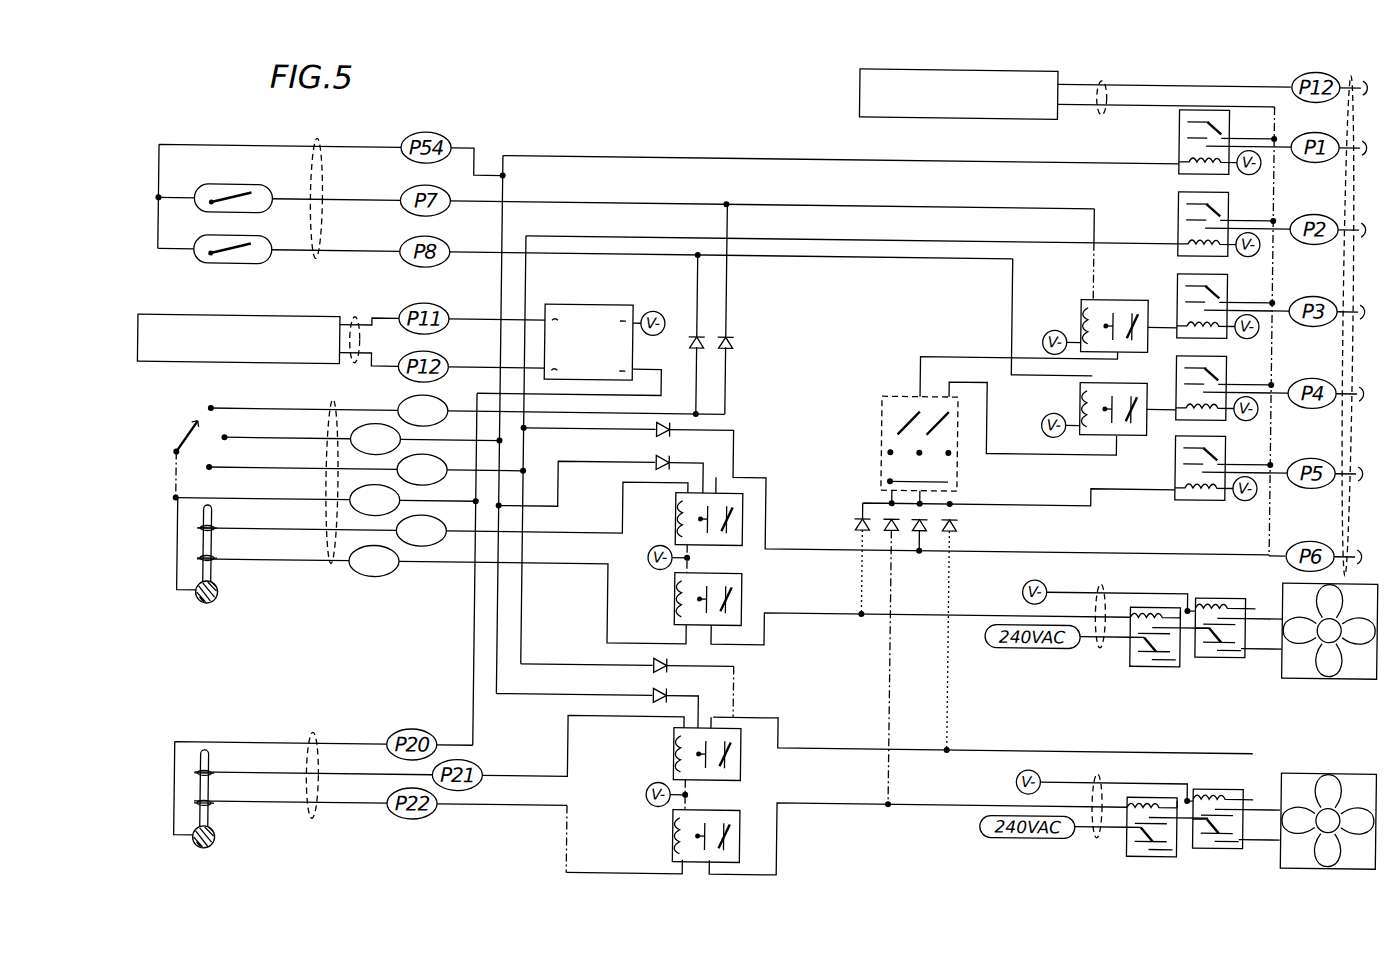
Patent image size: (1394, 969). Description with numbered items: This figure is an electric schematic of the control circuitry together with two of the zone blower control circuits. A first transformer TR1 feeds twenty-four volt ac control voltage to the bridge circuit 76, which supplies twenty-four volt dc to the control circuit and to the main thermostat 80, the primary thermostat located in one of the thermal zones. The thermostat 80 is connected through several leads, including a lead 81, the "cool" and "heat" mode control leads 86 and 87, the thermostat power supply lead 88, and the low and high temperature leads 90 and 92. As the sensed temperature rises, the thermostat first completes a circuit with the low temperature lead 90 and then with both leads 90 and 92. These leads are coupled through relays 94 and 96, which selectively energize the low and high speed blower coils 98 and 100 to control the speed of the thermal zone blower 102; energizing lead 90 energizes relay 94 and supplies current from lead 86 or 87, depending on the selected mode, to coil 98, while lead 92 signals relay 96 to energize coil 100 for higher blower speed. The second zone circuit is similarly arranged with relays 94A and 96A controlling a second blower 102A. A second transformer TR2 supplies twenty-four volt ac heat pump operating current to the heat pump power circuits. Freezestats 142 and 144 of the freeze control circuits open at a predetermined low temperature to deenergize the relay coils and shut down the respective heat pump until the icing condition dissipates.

The freezestat 142 is at (262, 190).
The freezestat 144 is at (244, 269).
The transformer 1 TR1 is at (200, 321).
The second transformer TR2 is at (855, 92).
The bridge circuit 76 is at (596, 306).
The conductor 81 is at (308, 414).
The "cool" mode control lead 86 is at (308, 443).
The "heat" mode control lead 87 is at (308, 473).
The thermostat power supply lead 88 is at (308, 504).
The high temperature lead 92 is at (308, 534).
The low temperature lead 90 is at (308, 565).
The main thermostat 80 is at (226, 581).
The relay 96 is at (743, 537).
The relay 94 is at (676, 613).
The relay 96A is at (677, 758).
The relay 94A is at (677, 851).
The low speed blower coil 98 is at (1152, 602).
The high speed blower coil 100 is at (1223, 592).
The thermal zone blower 102 is at (1333, 670).
The fan 102A is at (1357, 765).